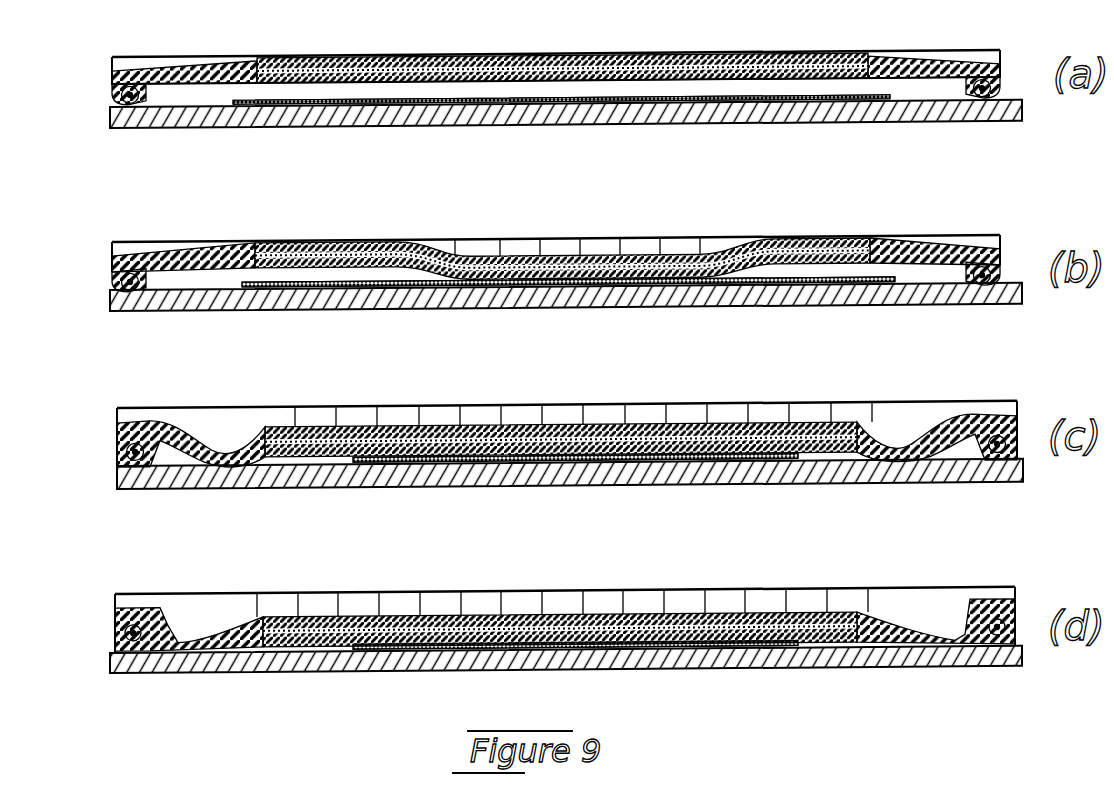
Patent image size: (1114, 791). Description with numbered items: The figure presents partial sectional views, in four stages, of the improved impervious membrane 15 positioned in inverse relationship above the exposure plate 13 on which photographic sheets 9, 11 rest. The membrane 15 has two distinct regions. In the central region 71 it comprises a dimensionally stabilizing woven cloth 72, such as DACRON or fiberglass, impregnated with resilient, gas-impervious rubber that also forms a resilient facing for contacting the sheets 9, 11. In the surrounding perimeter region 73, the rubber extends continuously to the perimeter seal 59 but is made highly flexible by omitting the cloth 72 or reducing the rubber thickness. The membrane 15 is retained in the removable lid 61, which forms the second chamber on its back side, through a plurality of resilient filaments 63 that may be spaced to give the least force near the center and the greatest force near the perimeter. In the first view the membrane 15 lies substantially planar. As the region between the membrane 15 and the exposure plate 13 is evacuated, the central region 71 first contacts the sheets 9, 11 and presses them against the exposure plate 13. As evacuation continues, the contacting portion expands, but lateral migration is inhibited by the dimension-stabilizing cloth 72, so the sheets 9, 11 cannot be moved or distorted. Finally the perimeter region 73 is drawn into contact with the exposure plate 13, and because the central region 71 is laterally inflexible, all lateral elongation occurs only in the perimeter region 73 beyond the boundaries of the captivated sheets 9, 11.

The photographic sheet 9 is at (728, 100).
The photographic sheet 11 is at (565, 359).
The exposure plate 13 is at (900, 122).
The membrane 15 is at (580, 70).
The perimeter seal 59 is at (112, 90).
The removable lid 61 is at (213, 56).
The resilient filaments 63 is at (572, 245).
The central region 71 is at (668, 41).
The woven cloth 72 is at (345, 58).
The perimeter region 73 is at (152, 70).